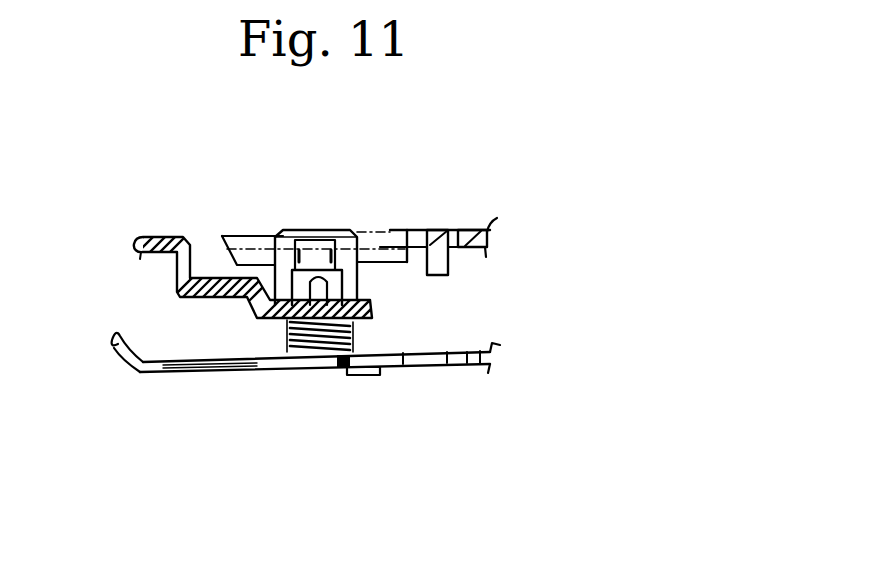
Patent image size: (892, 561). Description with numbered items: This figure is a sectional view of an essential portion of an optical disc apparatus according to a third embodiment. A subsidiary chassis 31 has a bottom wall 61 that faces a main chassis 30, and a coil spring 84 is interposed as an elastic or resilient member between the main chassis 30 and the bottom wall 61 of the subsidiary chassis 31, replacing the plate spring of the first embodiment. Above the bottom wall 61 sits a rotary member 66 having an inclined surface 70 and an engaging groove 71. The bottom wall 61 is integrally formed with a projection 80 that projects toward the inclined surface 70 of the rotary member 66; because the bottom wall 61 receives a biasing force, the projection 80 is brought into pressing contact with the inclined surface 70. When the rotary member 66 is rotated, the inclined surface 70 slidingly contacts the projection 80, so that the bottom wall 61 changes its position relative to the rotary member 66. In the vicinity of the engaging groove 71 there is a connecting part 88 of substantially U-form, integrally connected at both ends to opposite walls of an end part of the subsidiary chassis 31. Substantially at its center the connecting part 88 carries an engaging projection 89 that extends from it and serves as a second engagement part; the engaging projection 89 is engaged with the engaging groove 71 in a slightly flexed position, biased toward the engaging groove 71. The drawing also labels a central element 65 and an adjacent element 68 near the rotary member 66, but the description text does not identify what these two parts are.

The main chassis 30 is at (468, 378).
The subsidiary chassis 31 is at (150, 233).
The bottom wall 61 is at (353, 277).
The pin 65 is at (350, 226).
The rotary member 66 is at (247, 232).
The block 68 is at (357, 266).
The inclined surface 70 is at (252, 315).
The engaging groove 71 is at (407, 228).
The projection 80 is at (397, 280).
The coil spring 84 is at (268, 356).
The connecting part 88 is at (448, 275).
The engaging projection 89 is at (428, 230).